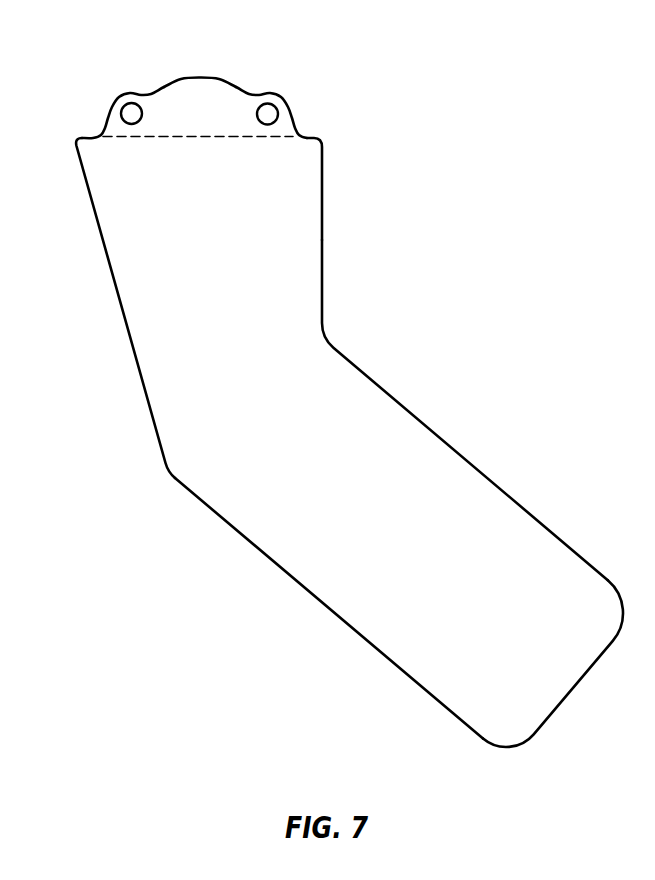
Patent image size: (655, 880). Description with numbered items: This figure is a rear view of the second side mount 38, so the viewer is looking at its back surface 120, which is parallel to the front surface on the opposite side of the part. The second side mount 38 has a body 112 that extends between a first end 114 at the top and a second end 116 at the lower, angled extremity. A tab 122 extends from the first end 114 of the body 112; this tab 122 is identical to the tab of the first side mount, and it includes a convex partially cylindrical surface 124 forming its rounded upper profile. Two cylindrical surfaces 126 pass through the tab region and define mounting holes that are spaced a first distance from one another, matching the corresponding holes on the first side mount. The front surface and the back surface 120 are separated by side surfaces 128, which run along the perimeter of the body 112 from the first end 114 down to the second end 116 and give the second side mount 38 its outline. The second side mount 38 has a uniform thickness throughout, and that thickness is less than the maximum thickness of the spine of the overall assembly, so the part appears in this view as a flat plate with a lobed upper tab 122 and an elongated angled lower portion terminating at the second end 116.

The second side mount 38 is at (397, 198).
The body 112 is at (382, 413).
The first end 114 is at (310, 157).
The second end 116 is at (568, 682).
The back surface 120 is at (275, 407).
The tab 122 is at (200, 85).
The convex partially cylindrical surface 124 is at (233, 83).
The cylindrical surfaces 126 is at (113, 108).
The side surfaces 128 is at (115, 290).